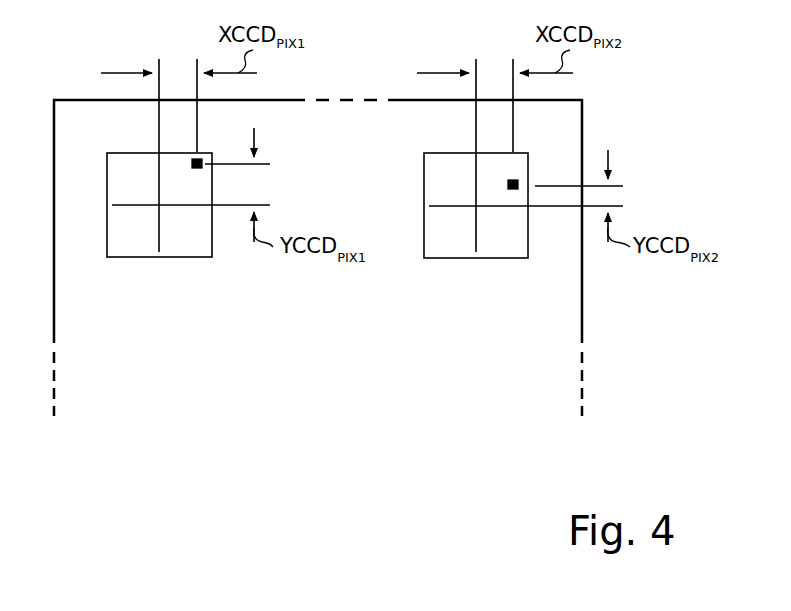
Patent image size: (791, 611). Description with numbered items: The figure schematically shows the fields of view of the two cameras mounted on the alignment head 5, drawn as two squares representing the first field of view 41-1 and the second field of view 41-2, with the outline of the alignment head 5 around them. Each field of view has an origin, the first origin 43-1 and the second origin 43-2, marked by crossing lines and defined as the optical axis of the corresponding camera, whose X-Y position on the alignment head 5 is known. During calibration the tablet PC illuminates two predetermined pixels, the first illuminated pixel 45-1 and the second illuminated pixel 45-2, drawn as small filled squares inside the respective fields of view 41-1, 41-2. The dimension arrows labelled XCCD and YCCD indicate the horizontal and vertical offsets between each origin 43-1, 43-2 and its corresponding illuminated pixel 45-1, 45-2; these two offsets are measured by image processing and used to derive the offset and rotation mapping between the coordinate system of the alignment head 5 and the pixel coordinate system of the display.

The alignment head 5 is at (583, 339).
The field of view of first camera 41-1 is at (180, 257).
The field of view of second camera 41-2 is at (437, 258).
The origin of first field of view 43-1 is at (157, 206).
The origin of second field of view 43-2 is at (476, 205).
The first predetermined illuminated pixel 45-1 is at (202, 160).
The second predetermined illuminated pixel 45-2 is at (513, 180).